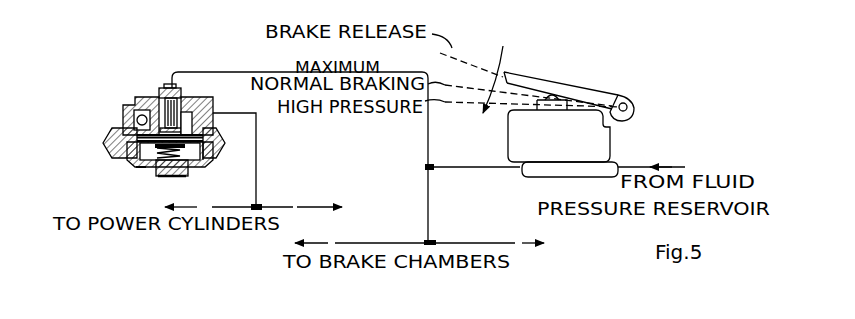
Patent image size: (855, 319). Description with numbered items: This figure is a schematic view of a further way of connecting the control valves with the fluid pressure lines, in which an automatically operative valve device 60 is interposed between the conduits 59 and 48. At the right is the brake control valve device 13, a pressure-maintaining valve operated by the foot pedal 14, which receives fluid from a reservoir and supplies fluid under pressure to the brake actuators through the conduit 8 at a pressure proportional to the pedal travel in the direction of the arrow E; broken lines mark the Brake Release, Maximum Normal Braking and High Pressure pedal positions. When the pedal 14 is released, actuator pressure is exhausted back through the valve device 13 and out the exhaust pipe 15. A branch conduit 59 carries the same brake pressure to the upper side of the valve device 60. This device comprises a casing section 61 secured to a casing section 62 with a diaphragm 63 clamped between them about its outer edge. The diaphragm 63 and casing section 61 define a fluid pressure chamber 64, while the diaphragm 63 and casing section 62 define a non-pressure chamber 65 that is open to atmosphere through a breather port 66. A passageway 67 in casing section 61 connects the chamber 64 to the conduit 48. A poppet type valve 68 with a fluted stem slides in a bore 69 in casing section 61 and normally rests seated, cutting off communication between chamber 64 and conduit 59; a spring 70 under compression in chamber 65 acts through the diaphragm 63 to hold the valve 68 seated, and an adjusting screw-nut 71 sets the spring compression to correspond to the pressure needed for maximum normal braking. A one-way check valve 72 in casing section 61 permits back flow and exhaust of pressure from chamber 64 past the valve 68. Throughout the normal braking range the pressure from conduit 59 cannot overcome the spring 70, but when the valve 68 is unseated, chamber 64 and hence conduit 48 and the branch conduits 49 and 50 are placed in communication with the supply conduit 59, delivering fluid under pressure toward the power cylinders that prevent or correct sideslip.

The conduit 8 is at (431, 170).
The brake control valve device 13 is at (612, 133).
The foot pedal 14 is at (590, 92).
The exhaust pipe 15 is at (565, 186).
The conduit 48 is at (257, 172).
The conduit 49 is at (252, 207).
The conduit 50 is at (290, 207).
The conduit 59 is at (283, 71).
The automatically operative valve device 60 is at (160, 87).
The casing section 61 is at (128, 100).
The casing section 62 is at (206, 152).
The diaphragm 63 is at (214, 143).
The fluid pressure chamber 64 is at (124, 124).
The non-pressure chamber 65 is at (130, 150).
The breather port 66 is at (188, 163).
The passageway 67 is at (212, 129).
The poppet type valve 68 is at (203, 108).
The bore 69 is at (178, 101).
The spring 70 is at (171, 174).
The adjusting screw-nut 71 is at (157, 168).
The one-way check valve 72 is at (137, 116).
The arrow E is at (501, 70).